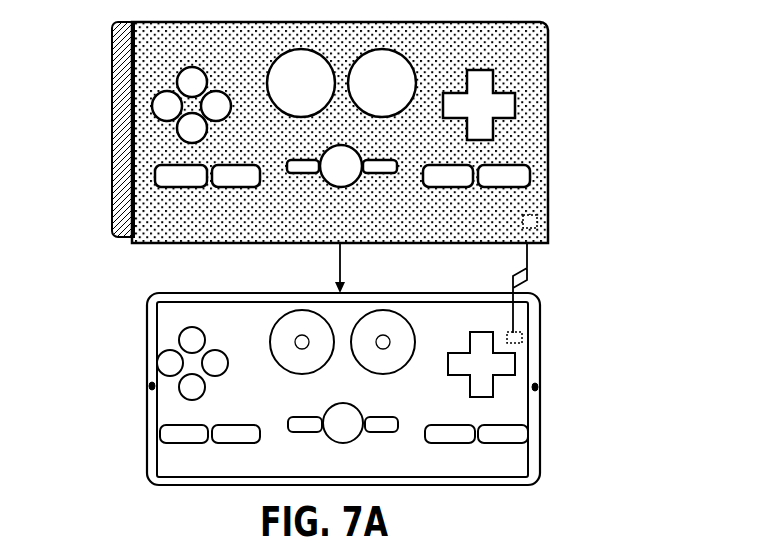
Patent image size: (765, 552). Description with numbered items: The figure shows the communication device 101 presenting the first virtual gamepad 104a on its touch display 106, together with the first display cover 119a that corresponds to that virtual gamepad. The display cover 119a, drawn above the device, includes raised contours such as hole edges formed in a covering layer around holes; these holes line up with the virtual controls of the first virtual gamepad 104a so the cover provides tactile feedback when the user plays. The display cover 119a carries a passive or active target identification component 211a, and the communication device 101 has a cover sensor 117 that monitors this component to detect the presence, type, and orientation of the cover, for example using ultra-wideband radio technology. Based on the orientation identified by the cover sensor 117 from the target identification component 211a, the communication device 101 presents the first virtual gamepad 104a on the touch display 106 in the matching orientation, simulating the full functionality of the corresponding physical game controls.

The first display cover 119a is at (548, 40).
The cover sensor 117 is at (537, 222).
The target identification component 211a is at (522, 340).
The communication device 101 is at (145, 339).
The touch display 106 is at (157, 417).
The first virtual gamepad 104a is at (512, 458).